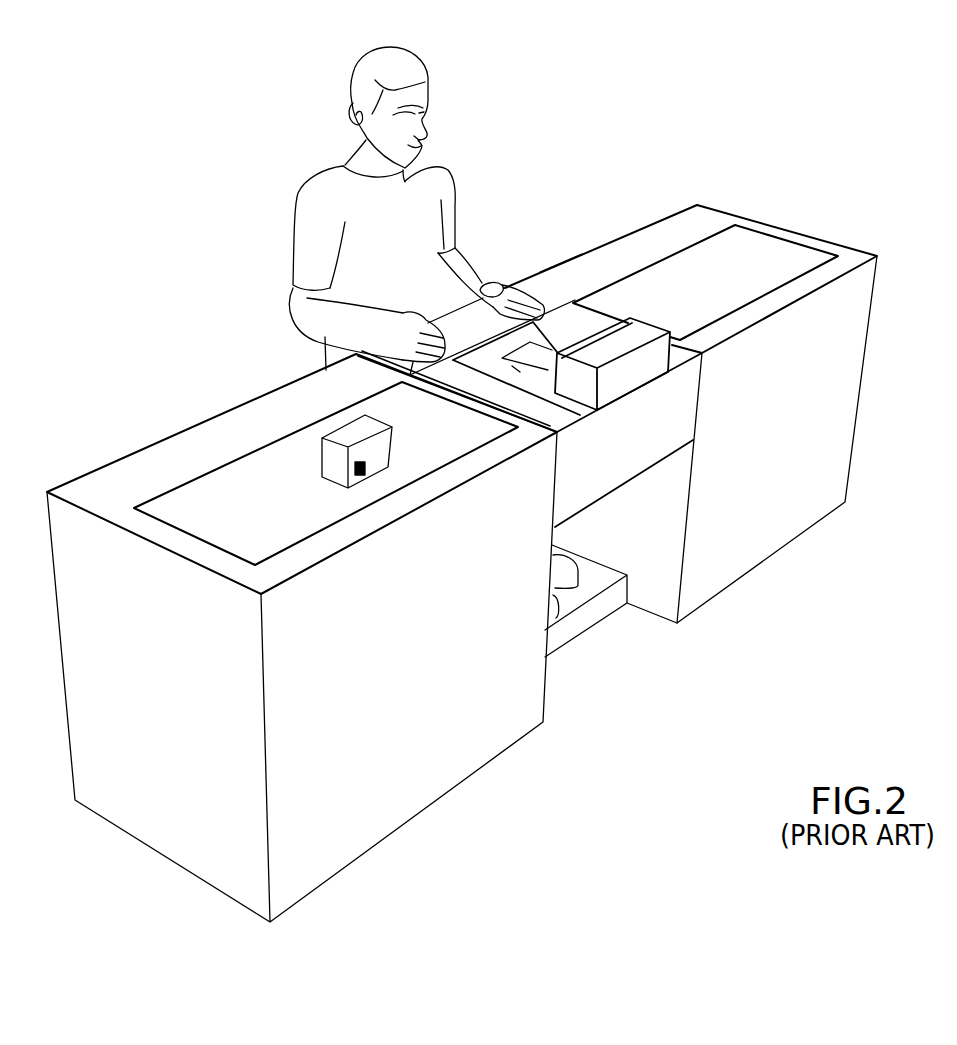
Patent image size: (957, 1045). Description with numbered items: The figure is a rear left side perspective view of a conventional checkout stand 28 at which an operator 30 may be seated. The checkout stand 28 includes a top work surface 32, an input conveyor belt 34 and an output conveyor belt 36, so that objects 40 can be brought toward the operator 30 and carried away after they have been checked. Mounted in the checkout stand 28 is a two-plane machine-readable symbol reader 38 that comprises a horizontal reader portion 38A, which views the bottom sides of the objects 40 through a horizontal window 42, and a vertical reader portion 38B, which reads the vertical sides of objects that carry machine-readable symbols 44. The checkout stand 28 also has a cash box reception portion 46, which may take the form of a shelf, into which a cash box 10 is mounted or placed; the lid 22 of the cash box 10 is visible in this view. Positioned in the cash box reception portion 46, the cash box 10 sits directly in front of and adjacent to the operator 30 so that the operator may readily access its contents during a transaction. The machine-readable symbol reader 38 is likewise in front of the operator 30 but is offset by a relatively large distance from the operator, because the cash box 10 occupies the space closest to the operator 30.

The cash box 10 is at (456, 302).
The lid 22 is at (453, 328).
The checkout stand 28 is at (838, 187).
The operator 30 is at (430, 153).
The top work surface 32 is at (558, 327).
The input conveyor belt 34 is at (178, 510).
The output conveyor belt 36 is at (705, 257).
The two-plane machine-readable symbol reader 38 is at (647, 313).
The horizontal reader portion 38A is at (515, 368).
The vertical reader portion 38B is at (630, 338).
The objects 40 is at (345, 437).
The horizontal window 42 is at (535, 352).
The machine-readable symbols 44 is at (363, 475).
The cash box reception portion 46 is at (361, 369).